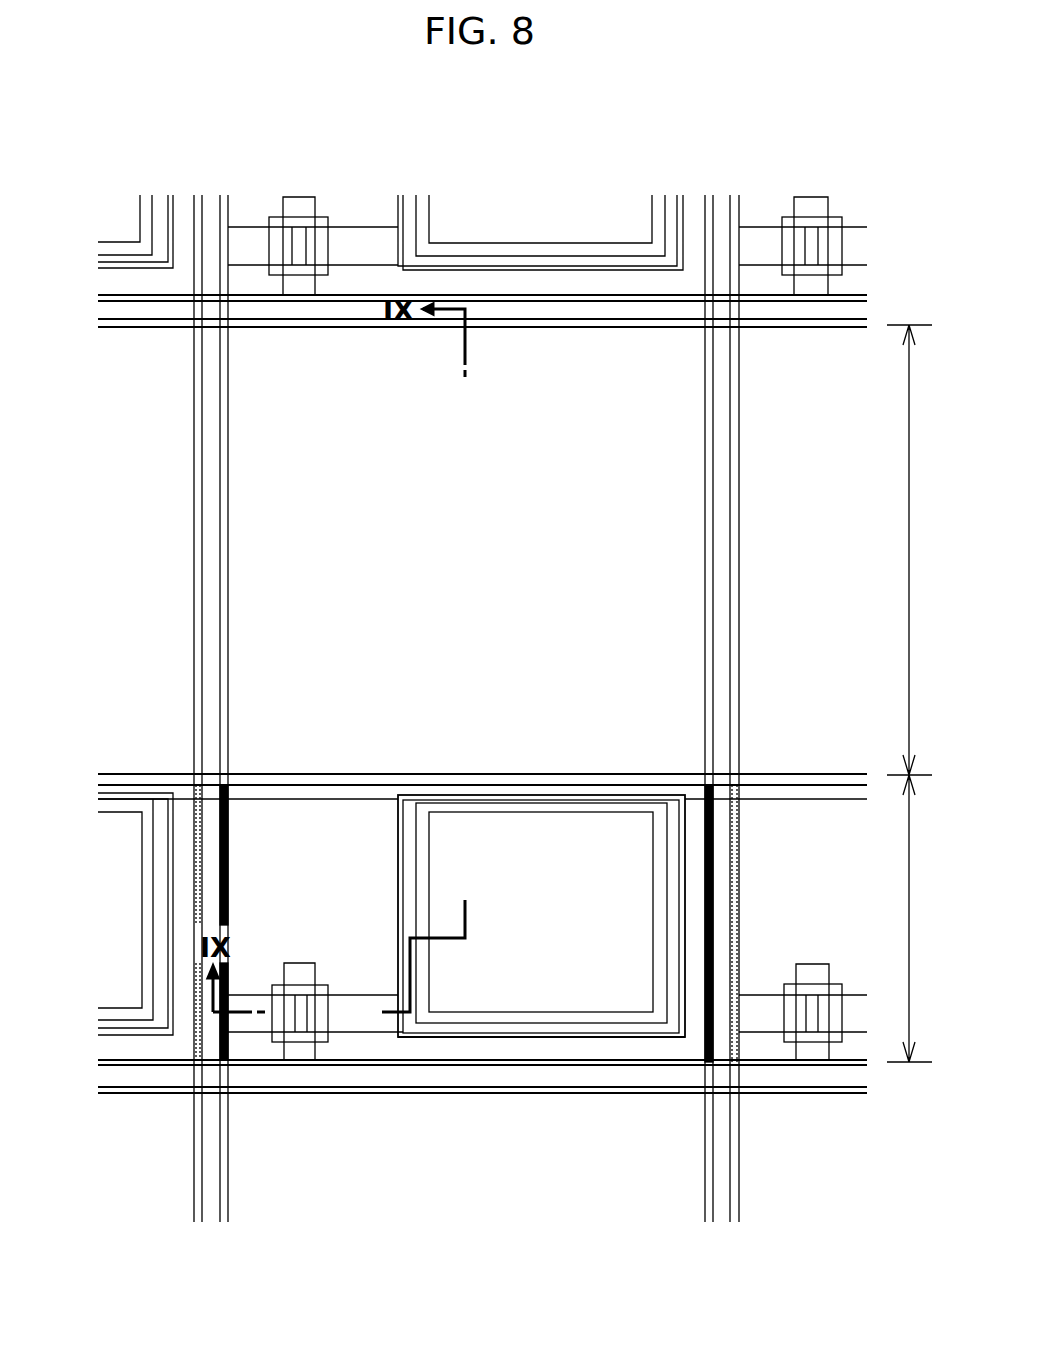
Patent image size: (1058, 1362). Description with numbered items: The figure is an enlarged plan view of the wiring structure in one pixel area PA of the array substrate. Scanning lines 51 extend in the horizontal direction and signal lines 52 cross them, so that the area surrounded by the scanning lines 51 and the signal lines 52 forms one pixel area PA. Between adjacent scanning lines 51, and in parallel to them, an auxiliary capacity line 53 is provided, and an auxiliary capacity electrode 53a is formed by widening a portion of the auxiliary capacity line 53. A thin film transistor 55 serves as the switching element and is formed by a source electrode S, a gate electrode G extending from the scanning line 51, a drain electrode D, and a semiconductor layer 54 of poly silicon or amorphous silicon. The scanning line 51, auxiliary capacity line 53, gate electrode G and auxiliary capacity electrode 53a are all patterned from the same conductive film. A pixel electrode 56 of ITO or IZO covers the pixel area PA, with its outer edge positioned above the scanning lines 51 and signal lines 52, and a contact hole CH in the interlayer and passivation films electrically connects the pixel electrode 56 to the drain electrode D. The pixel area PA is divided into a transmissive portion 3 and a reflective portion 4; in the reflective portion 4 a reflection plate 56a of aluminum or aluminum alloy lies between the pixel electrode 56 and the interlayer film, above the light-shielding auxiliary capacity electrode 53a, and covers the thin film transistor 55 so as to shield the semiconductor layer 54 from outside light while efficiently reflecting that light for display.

The scanning line 51 is at (140, 316).
The signal line 52 is at (205, 1222).
The auxiliary capacity line 53 is at (309, 785).
The auxiliary capacity electrode 53a is at (595, 1037).
The semiconductor layer 54 is at (323, 1040).
The thin film transistor 55 is at (330, 1026).
The pixel electrode 56 is at (220, 597).
The reflection plate 56a is at (628, 790).
The contact hole CH is at (545, 812).
The gate electrode G is at (300, 963).
The source electrode S is at (253, 1022).
The drain electrode D is at (390, 1023).
The pixel area PA is at (280, 123).
The transmissive portion 3 is at (918, 566).
The reflective portion 4 is at (918, 936).